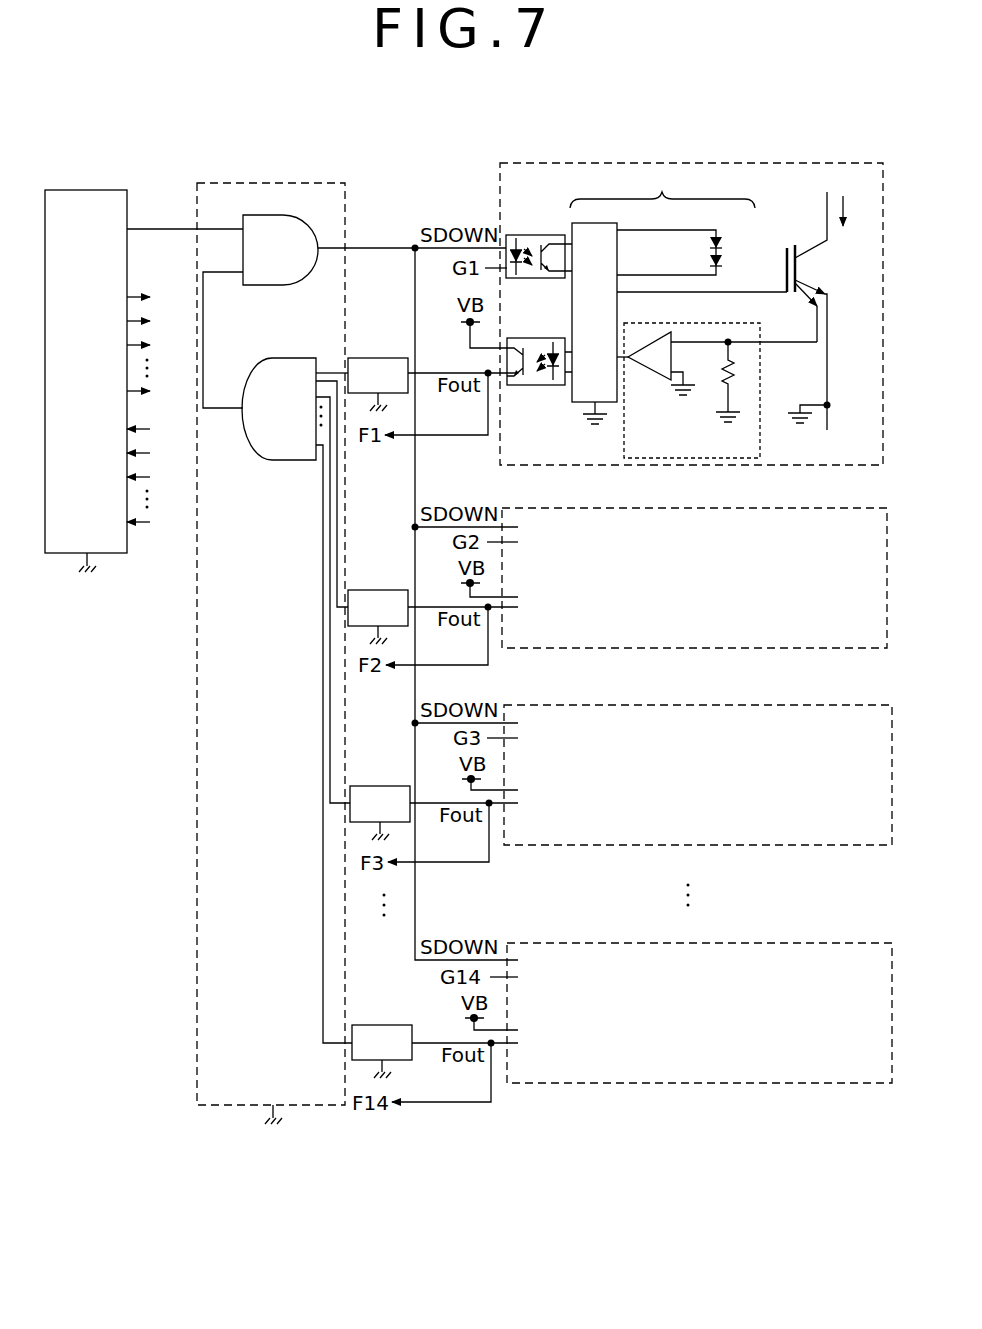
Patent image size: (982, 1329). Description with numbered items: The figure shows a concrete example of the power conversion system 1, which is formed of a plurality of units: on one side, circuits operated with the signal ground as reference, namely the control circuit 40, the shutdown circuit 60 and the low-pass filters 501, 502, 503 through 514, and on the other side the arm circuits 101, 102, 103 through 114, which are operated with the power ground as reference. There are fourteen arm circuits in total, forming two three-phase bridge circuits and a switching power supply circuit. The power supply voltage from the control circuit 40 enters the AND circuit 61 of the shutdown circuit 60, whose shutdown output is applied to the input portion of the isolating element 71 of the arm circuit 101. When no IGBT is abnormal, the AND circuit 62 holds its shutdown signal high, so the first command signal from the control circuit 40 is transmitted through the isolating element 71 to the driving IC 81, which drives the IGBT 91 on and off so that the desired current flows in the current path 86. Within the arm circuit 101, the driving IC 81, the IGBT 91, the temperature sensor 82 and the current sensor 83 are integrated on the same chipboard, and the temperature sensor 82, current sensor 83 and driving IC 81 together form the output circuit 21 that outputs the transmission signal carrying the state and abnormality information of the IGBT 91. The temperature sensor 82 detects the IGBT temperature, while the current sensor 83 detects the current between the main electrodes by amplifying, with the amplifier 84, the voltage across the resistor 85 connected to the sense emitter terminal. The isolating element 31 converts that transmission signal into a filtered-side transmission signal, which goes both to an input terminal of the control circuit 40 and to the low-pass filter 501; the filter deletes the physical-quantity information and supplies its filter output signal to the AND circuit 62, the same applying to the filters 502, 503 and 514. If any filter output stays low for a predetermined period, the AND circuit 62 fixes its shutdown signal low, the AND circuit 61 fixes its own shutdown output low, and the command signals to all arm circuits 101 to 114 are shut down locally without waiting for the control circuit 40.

The power conversion system 1 is at (63, 168).
The control circuit 40 is at (90, 190).
The shutdown circuit 60 is at (333, 183).
The AND circuit 61 is at (283, 215).
The AND circuit 62 is at (280, 358).
The low-pass filter 501 is at (378, 358).
The low-pass filter 502 is at (378, 590).
The low-pass filter 503 is at (380, 786).
The low-pass filter 514 is at (382, 1025).
The arm circuit 101 is at (822, 163).
The arm circuit 102 is at (826, 508).
The arm circuit 103 is at (828, 705).
The arm circuit 114 is at (828, 943).
The isolating element 71 is at (535, 235).
The isolating element 31 is at (540, 338).
The output circuit 21 is at (662, 186).
The driving IC 81 is at (617, 227).
The temperature sensor 82 is at (722, 235).
The current sensor 83 is at (714, 323).
The amplifier 84 is at (652, 372).
The resistor 85 is at (740, 380).
The current path 86 is at (827, 202).
The IGBT 91 is at (790, 245).